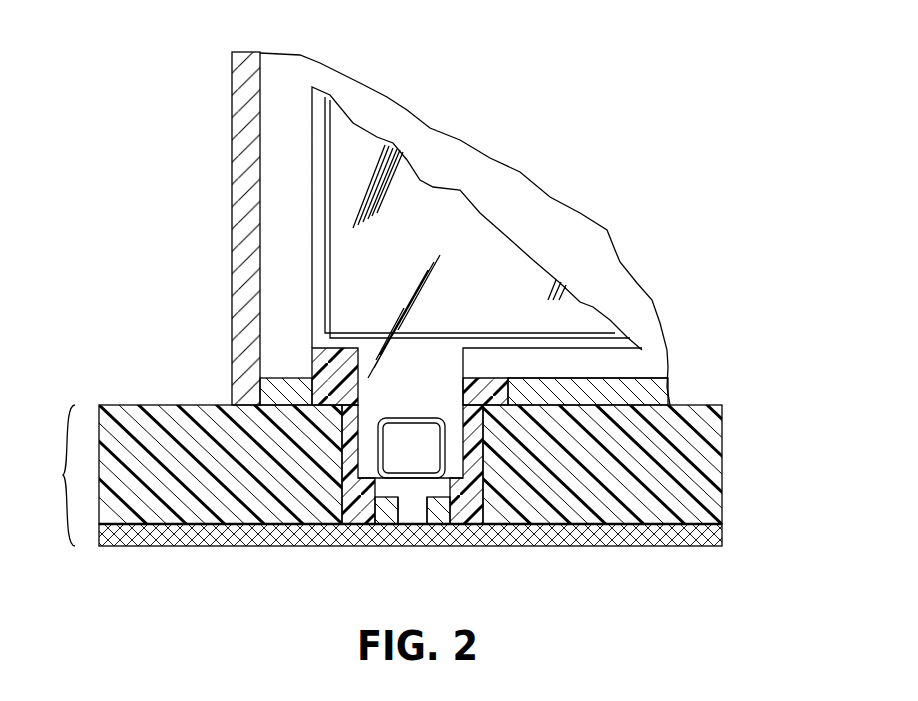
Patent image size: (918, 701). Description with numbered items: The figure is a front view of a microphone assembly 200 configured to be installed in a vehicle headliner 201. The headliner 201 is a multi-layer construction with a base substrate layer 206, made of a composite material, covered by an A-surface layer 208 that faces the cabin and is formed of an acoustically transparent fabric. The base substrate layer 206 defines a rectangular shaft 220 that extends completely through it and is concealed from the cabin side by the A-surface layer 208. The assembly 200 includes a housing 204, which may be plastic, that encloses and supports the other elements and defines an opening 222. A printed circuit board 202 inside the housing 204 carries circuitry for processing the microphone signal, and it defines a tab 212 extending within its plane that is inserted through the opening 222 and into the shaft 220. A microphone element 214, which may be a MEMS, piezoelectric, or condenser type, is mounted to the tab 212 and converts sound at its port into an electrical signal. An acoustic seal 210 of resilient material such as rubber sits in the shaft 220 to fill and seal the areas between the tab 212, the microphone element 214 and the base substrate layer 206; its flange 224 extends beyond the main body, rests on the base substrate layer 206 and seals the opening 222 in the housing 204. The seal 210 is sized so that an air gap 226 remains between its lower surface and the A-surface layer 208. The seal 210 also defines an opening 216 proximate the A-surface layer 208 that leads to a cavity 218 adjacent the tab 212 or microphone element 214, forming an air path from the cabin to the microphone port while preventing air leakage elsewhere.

The microphone assembly 200 is at (498, 90).
The vehicle headliner 201 is at (47, 475).
The printed circuit board 202 is at (470, 230).
The housing 204 is at (232, 190).
The base substrate layer 206 is at (722, 445).
The A-surface layer 208 is at (722, 535).
The acoustic seal 210 is at (305, 393).
The tab 212 is at (313, 348).
The microphone element 214 is at (466, 482).
The opening 216 is at (411, 520).
The cavity 218 is at (440, 492).
The shaft 220 is at (345, 472).
The opening 222 is at (507, 393).
The flange 224 is at (440, 450).
The air gap 226 is at (392, 503).